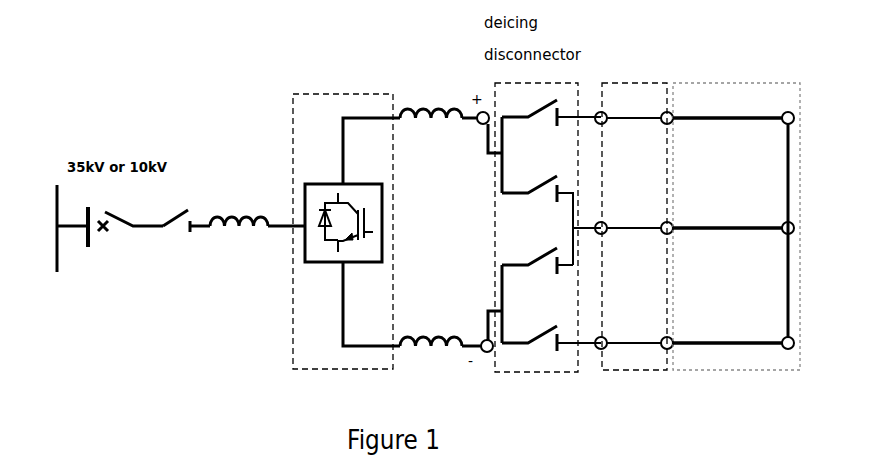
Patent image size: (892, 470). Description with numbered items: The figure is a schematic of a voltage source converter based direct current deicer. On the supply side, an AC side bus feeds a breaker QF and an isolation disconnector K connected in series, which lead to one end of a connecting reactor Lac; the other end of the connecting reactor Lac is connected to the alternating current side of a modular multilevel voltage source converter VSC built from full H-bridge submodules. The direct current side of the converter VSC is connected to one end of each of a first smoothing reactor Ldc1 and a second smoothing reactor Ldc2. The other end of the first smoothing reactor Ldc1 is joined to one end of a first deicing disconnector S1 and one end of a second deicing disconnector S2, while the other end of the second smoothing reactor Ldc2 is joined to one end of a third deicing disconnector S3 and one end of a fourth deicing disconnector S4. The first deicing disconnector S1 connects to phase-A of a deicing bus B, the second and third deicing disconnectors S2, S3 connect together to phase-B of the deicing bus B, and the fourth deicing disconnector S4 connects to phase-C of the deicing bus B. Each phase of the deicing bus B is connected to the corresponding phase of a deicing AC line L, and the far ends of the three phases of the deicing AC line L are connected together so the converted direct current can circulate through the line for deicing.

The breaker QF is at (134, 212).
The isolation disconnector K is at (176, 214).
The connecting reactor Lac is at (247, 208).
The modular multilevel voltage source converter VSC is at (346, 231).
The first smoothing reactor Ldc1 is at (438, 103).
The second smoothing reactor Ldc2 is at (440, 331).
The first deicing disconnector S1 is at (551, 109).
The second deicing disconnector S2 is at (551, 217).
The third deicing disconnector S3 is at (537, 259).
The fourth deicing disconnector S4 is at (551, 336).
The deicing bus B is at (634, 191).
The deicing AC line L is at (742, 211).